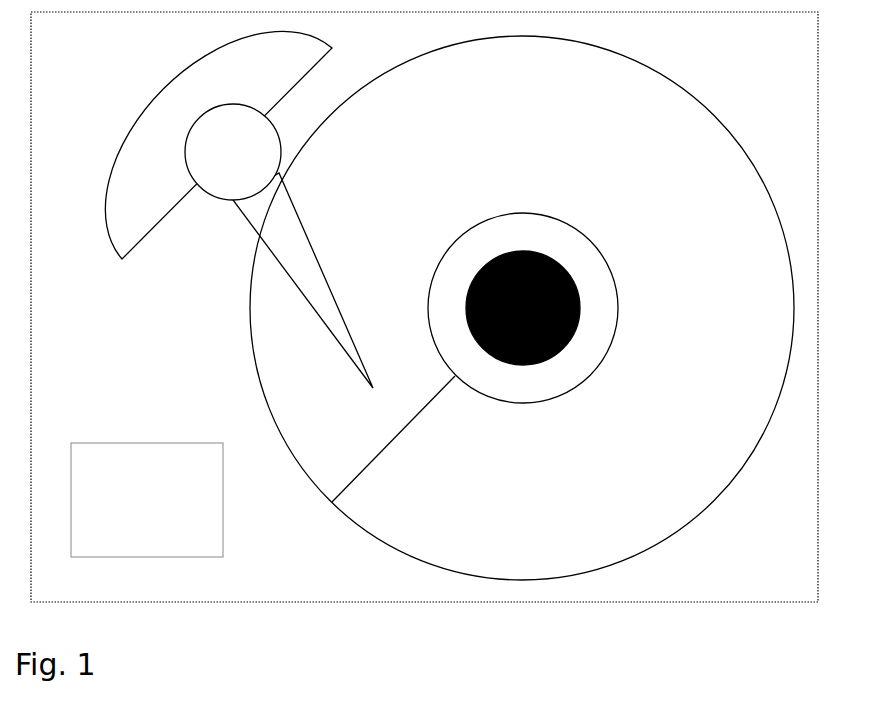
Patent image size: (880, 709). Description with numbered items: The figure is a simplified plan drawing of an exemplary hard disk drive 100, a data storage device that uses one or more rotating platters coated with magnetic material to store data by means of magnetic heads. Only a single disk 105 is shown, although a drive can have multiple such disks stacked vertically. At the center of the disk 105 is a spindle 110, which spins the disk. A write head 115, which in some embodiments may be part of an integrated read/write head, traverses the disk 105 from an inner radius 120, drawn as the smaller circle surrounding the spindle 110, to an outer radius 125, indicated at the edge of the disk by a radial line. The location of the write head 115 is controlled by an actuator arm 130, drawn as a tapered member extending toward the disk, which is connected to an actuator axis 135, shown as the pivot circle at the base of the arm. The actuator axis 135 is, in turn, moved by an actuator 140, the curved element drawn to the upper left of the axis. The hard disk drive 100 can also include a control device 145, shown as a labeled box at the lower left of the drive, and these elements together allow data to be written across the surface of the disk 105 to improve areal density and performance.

The hard disk drive 100 is at (248, 638).
The disk 105 is at (687, 528).
The spindle 110 is at (582, 313).
The write head 115 is at (372, 390).
The inner radius 120 is at (453, 378).
The outer radius 125 is at (333, 502).
The actuator arm 130 is at (308, 238).
The actuator axis 135 is at (233, 152).
The actuator 140 is at (140, 247).
The control device 145 is at (147, 500).